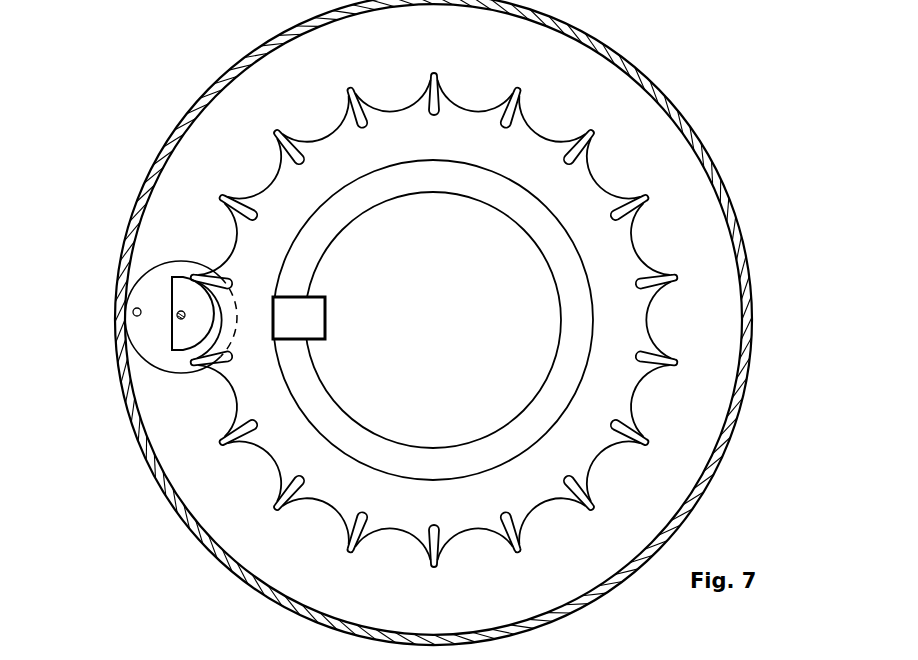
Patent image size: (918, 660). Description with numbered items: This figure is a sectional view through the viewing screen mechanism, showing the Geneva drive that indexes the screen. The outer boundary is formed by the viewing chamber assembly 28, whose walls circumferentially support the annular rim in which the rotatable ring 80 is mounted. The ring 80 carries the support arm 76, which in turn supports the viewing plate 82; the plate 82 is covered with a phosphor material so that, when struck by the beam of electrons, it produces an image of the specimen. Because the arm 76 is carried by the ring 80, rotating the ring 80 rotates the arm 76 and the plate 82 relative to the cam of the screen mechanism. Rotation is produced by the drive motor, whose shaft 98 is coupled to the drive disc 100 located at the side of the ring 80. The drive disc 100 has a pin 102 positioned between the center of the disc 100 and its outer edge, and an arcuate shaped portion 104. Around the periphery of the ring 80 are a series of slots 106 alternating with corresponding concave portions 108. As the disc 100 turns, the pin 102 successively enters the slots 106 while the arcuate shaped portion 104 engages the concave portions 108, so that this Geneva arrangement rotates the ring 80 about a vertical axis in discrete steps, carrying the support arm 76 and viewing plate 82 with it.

The viewing chamber assembly 28 is at (238, 575).
The support arm 76 is at (313, 325).
The rotatable ring 80 is at (536, 500).
The viewing plate 82 is at (481, 370).
The shaft 98 is at (185, 319).
The drive disc 100 is at (132, 356).
The pin 102 is at (137, 308).
The arcuate shaped portion 104 is at (178, 283).
The slots 106 is at (258, 200).
The concave portions 108 is at (322, 134).